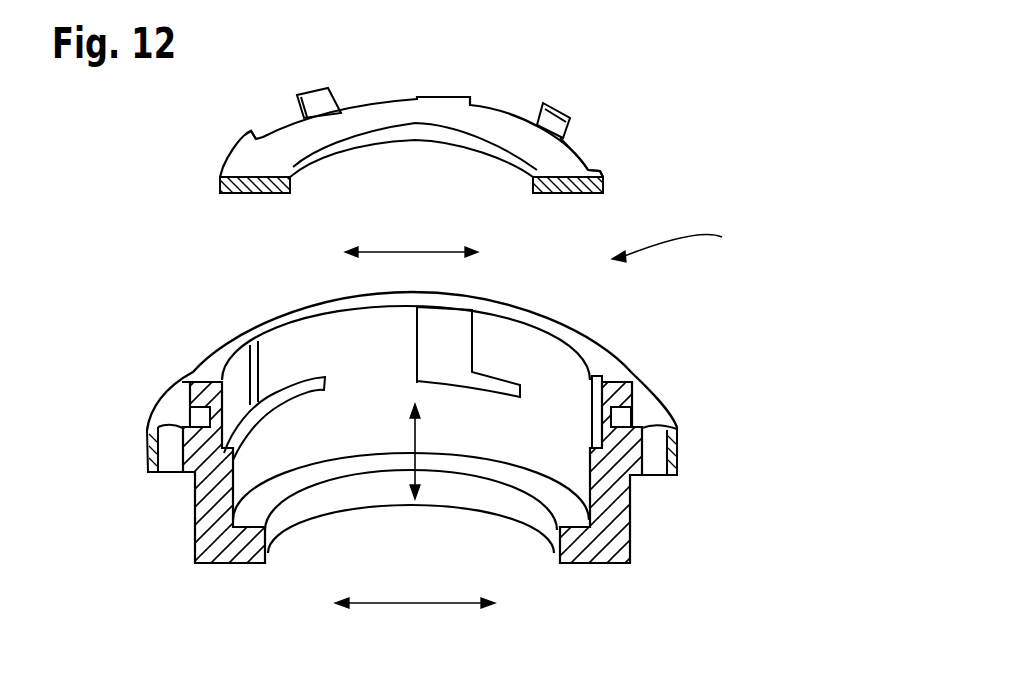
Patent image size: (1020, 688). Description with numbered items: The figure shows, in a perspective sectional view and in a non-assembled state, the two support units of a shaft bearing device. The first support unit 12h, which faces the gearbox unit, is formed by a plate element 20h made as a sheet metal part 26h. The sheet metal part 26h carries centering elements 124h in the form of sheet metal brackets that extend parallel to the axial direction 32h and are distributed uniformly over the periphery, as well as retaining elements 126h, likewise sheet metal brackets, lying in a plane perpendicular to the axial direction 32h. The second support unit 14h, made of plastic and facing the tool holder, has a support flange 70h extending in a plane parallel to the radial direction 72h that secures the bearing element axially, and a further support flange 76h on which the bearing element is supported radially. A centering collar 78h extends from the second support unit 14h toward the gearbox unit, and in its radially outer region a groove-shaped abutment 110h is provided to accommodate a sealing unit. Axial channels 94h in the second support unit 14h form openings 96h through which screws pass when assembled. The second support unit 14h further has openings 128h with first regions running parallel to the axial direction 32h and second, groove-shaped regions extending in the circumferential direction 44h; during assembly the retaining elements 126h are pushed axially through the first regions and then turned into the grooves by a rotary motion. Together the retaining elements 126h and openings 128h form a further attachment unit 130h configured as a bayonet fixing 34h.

The first support unit 12h is at (603, 189).
The second support unit 14h is at (632, 376).
The plate element 20h is at (558, 153).
The sheet metal part 26h is at (365, 124).
The axial direction 32h is at (420, 447).
The bayonet fixing 34h is at (691, 241).
The circumferential direction 44h is at (419, 250).
The support flange 70h is at (268, 552).
The radial direction 72h is at (413, 604).
The support flange 76h is at (212, 505).
The centering collar 78h is at (610, 390).
The axial channels 94h is at (657, 436).
The openings 96h is at (657, 460).
The groove-shaped abutment 110h is at (627, 420).
The centering elements 124h is at (312, 105).
The retaining elements 126h is at (443, 97).
The openings 128h is at (237, 373).
The further attachment unit 130h is at (224, 302).